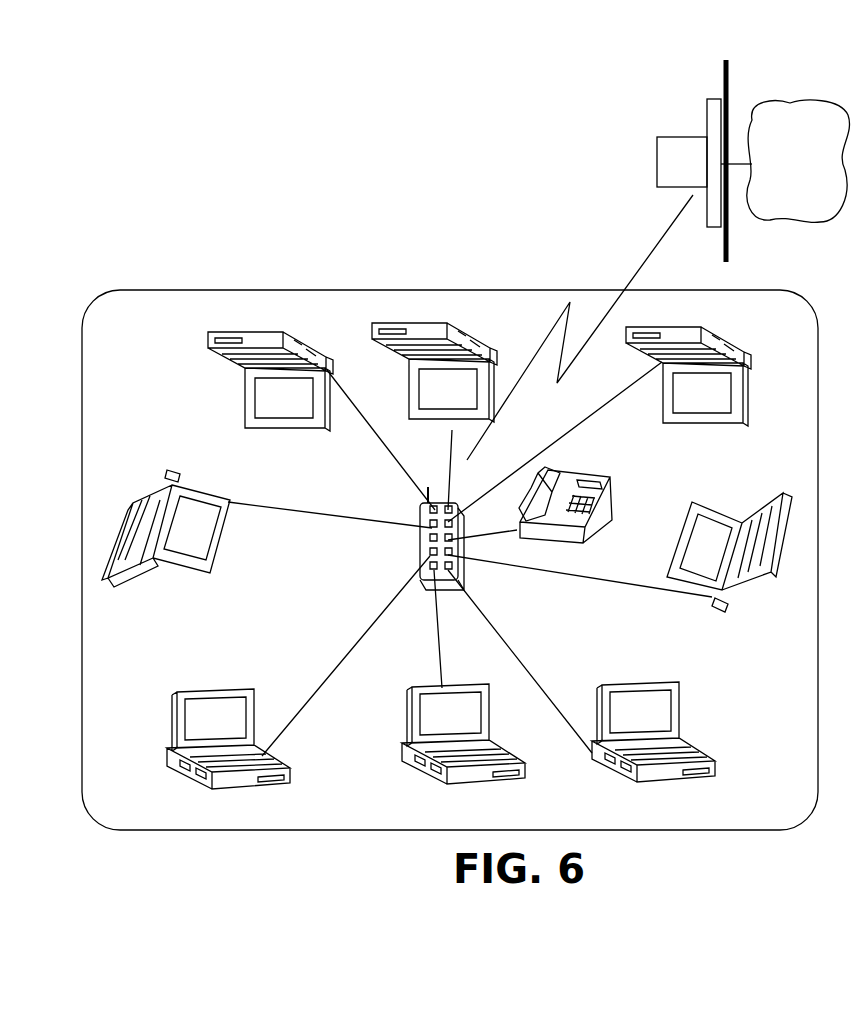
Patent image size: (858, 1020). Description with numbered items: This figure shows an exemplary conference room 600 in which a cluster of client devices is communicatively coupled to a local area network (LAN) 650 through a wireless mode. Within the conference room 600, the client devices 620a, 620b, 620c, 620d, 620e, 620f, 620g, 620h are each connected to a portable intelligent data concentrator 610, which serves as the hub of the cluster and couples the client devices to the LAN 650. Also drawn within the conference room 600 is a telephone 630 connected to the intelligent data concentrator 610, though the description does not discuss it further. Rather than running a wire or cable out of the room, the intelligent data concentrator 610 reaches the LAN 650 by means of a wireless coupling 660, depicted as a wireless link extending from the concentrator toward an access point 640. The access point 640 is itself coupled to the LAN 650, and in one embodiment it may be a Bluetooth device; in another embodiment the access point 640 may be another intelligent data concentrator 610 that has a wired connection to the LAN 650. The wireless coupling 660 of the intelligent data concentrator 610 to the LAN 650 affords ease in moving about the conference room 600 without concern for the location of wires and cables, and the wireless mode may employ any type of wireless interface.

The conference room 600 is at (500, 103).
The portable intelligent data concentrator 610 is at (418, 562).
The client device 620a is at (480, 783).
The client device 620b is at (675, 783).
The client device 620c is at (760, 575).
The client device 620d is at (732, 345).
The client device 620e is at (475, 343).
The client device 620f is at (302, 340).
The client device 620g is at (193, 573).
The client device 620h is at (247, 787).
The telephone 630 is at (610, 510).
The access point 640 is at (670, 179).
The local area network (LAN) 650 is at (784, 183).
The wireless coupling 660 is at (606, 312).